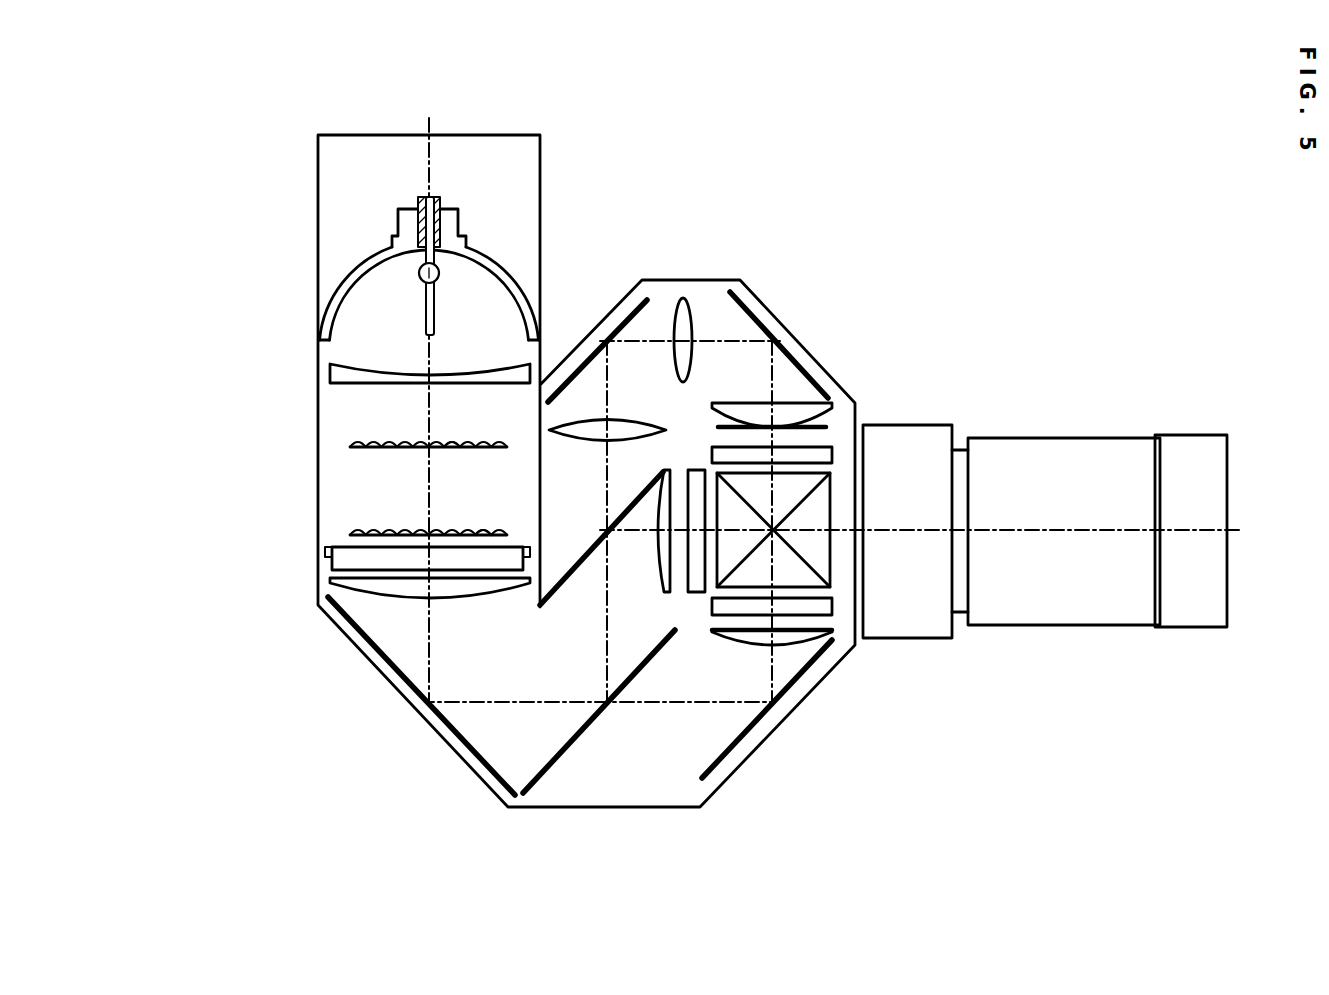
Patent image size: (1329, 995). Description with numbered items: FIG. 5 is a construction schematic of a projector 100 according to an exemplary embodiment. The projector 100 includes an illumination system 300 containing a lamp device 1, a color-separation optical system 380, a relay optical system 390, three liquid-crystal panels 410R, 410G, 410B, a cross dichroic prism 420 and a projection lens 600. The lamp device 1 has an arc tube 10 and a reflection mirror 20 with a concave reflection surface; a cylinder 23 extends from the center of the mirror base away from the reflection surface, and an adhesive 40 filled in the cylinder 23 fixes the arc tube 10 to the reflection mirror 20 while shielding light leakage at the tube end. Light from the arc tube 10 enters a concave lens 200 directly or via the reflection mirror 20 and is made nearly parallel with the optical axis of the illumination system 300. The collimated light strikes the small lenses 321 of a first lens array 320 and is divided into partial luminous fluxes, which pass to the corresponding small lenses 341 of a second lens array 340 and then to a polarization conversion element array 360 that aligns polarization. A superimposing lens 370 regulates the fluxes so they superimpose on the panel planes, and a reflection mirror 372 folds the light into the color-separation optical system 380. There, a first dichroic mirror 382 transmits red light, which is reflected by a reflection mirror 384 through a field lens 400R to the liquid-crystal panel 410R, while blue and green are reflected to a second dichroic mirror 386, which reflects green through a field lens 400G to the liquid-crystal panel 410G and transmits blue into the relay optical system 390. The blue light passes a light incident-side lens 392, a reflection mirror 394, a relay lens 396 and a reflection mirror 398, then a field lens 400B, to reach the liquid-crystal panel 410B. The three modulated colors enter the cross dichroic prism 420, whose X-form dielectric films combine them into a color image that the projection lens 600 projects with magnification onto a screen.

The lamp device 1 is at (221, 208).
The arc tube 10 is at (392, 280).
The reflection mirror 20 is at (372, 262).
The cylinder 23 is at (460, 222).
The adhesive 40 is at (442, 204).
The projector 100 is at (1080, 201).
The concave lens 200 is at (330, 380).
The illumination system 300 is at (178, 210).
The first lens array 320 is at (350, 447).
The small lens 321 is at (456, 450).
The second lens array 340 is at (350, 535).
The small lens 341 is at (482, 531).
The polarization conversion element array 360 is at (326, 552).
The superimposing lens 370 is at (330, 590).
The reflection mirror 372 is at (360, 650).
The color-separation optical system 380 is at (600, 665).
The first dichroic mirror 382 is at (606, 703).
The reflection mirror 384 is at (716, 760).
The second dichroic mirror 386 is at (560, 578).
The relay optical system 390 is at (678, 293).
The light incident-side lens 392 is at (568, 441).
The reflection mirror 394 is at (586, 366).
The relay lens 396 is at (692, 360).
The reflection mirror 398 is at (775, 322).
The field lens 400B is at (752, 403).
The field lens 400G is at (657, 540).
The field lens 400R is at (735, 645).
The liquid-crystal panel 410B is at (712, 447).
The liquid-crystal panel 410G is at (694, 593).
The liquid-crystal panel 410R is at (718, 612).
The cross dichroic prism 420 is at (830, 560).
The projection lens 600 is at (1050, 438).